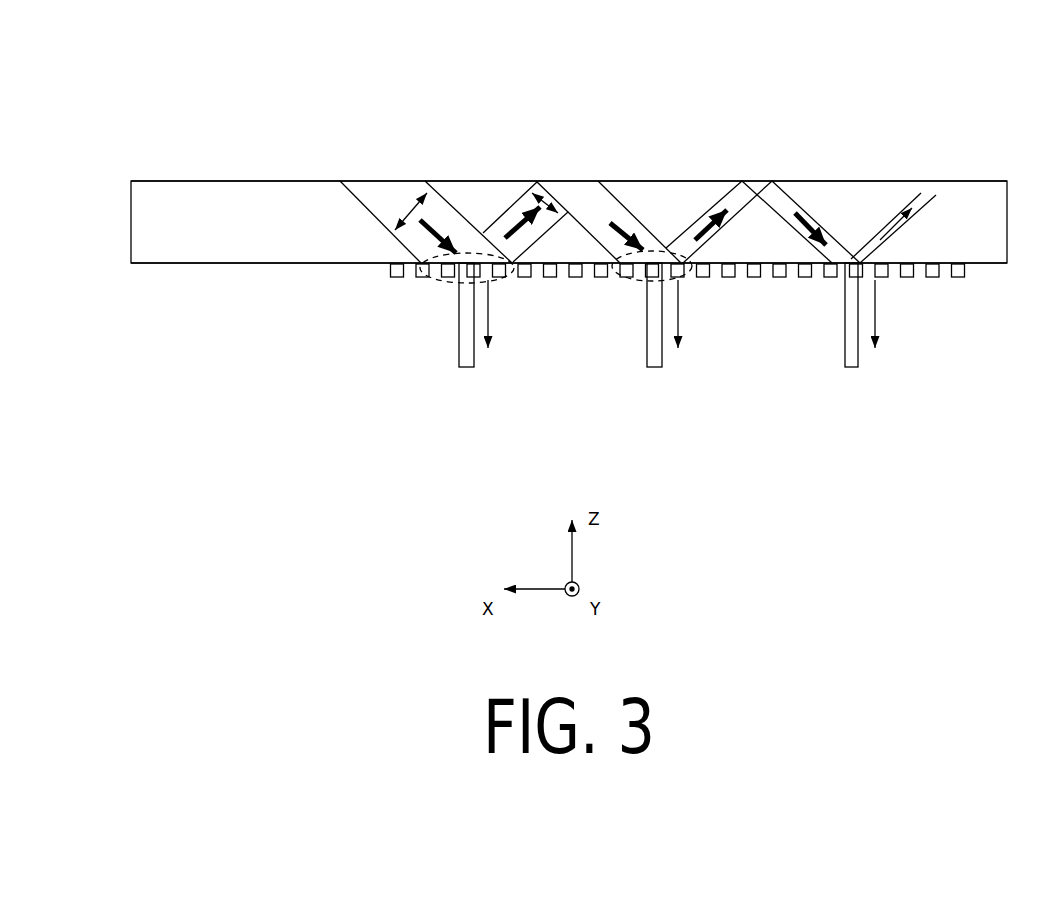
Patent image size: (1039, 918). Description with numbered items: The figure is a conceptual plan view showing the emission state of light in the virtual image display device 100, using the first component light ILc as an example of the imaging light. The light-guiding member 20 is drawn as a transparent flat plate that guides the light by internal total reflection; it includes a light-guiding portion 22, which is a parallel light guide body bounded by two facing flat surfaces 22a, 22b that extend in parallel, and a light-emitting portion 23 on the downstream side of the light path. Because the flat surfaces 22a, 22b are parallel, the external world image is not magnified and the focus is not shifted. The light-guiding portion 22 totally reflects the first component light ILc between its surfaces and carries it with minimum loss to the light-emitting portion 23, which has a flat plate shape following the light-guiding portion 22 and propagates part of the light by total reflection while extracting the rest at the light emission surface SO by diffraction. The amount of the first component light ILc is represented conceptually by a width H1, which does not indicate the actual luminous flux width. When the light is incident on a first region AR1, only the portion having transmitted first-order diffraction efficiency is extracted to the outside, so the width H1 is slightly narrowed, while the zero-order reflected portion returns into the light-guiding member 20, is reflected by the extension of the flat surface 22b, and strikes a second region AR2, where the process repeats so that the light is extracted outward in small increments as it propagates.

The virtual image display device 100 is at (383, 136).
The light-guiding member 20 is at (657, 190).
The light-guiding portion 22 is at (162, 200).
The flat surface 22a is at (188, 265).
The flat surface 22b is at (225, 181).
The light-emitting portion 23 is at (699, 198).
The width H1 is at (408, 205).
The first component light ILc is at (512, 216).
The light emission surface SO is at (590, 262).
The first region AR1 is at (442, 280).
The second region AR2 is at (633, 280).